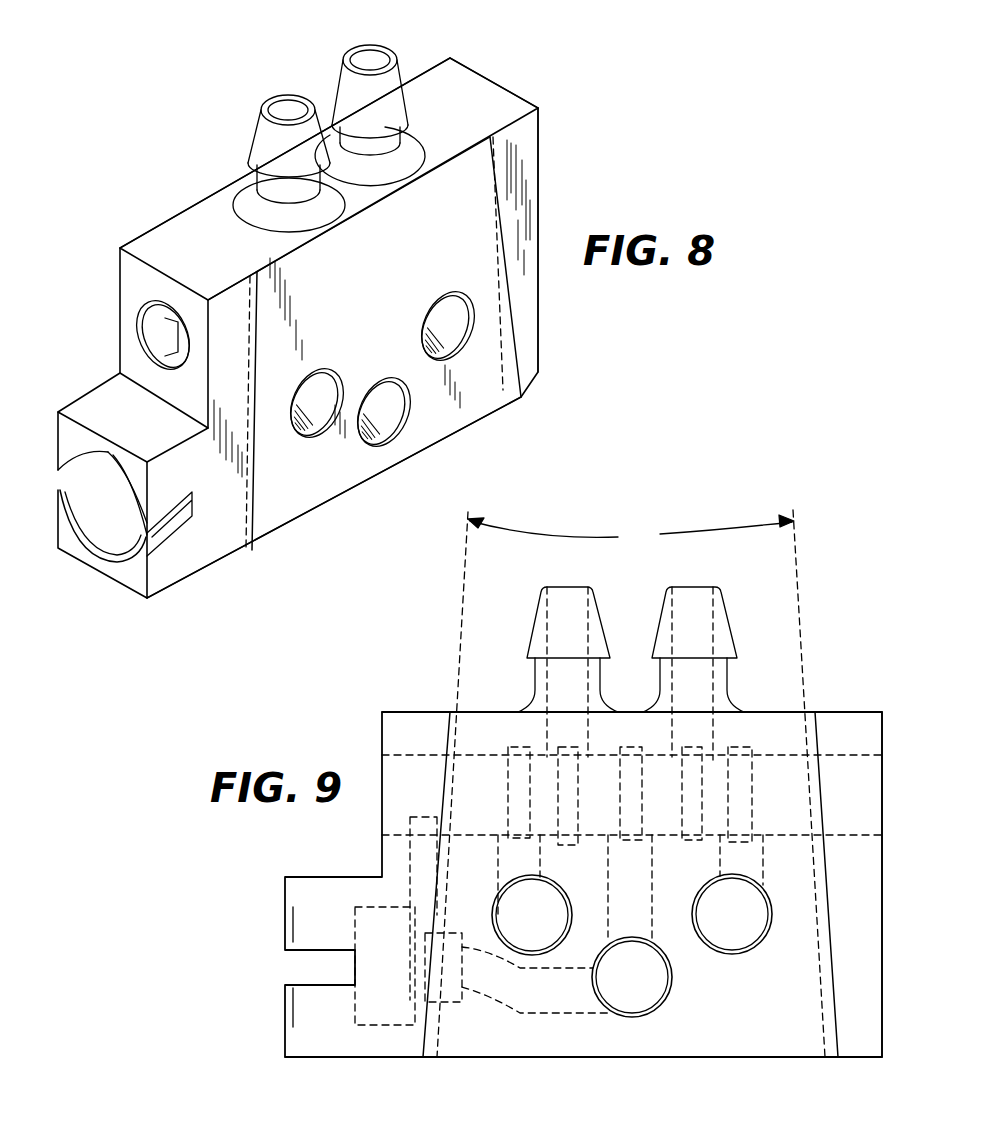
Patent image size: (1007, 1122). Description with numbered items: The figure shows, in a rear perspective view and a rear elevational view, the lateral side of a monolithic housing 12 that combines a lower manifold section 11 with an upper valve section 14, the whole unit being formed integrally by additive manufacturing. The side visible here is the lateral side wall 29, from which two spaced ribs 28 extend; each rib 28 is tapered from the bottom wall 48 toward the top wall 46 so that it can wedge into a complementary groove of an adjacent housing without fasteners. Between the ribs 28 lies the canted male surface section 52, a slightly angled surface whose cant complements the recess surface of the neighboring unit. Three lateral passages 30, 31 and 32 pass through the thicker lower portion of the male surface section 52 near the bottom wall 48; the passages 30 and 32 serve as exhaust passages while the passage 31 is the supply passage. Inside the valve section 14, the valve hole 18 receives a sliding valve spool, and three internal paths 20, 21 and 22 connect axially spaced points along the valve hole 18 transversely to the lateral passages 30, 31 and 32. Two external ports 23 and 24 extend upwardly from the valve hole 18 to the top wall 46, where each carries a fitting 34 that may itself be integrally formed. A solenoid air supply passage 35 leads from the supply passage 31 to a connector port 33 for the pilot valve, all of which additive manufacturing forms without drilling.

In FIG. 8, the manifold section 11 is at (478, 400).
In FIG. 9, the manifold section 11 is at (558, 1035).
In FIG. 8, the housing 12 is at (573, 62).
In FIG. 9, the housing 12 is at (828, 664).
In FIG. 8, the valve section 14 is at (506, 105).
In FIG. 9, the valve section 14 is at (852, 735).
In FIG. 8, the valve hole 18 is at (143, 332).
In FIG. 9, the internal path 20 is at (522, 858).
In FIG. 9, the internal path 21 is at (630, 880).
In FIG. 9, the internal path 22 is at (748, 860).
In FIG. 9, the external port 23 is at (703, 625).
In FIG. 9, the external port 24 is at (560, 620).
In FIG. 8, the rib 28 is at (506, 389).
In FIG. 9, the rib 28 is at (423, 1045).
In FIG. 8, the lateral side wall 29 is at (538, 184).
In FIG. 9, the lateral side wall 29 is at (845, 893).
In FIG. 8, the lateral passage 30 is at (446, 336).
In FIG. 9, the lateral passage 30 is at (745, 942).
In FIG. 8, the supply passage 31 is at (392, 405).
In FIG. 9, the supply passage 31 is at (650, 995).
In FIG. 8, the lateral passage 32 is at (327, 432).
In FIG. 9, the lateral passage 32 is at (510, 905).
In FIG. 8, the connector port 33 is at (170, 512).
In FIG. 9, the connector port 33 is at (355, 965).
In FIG. 8, the fitting 34 is at (342, 85).
In FIG. 9, the fitting 34 is at (631, 664).
In FIG. 9, the solenoid air supply passage 35 is at (520, 990).
In FIG. 8, the top wall 46 is at (472, 120).
In FIG. 8, the bottom wall 48 is at (410, 457).
In FIG. 9, the bottom wall 48 is at (757, 1057).
In FIG. 8, the canted male surface section 52 is at (425, 253).
In FIG. 9, the canted male surface section 52 is at (749, 1001).